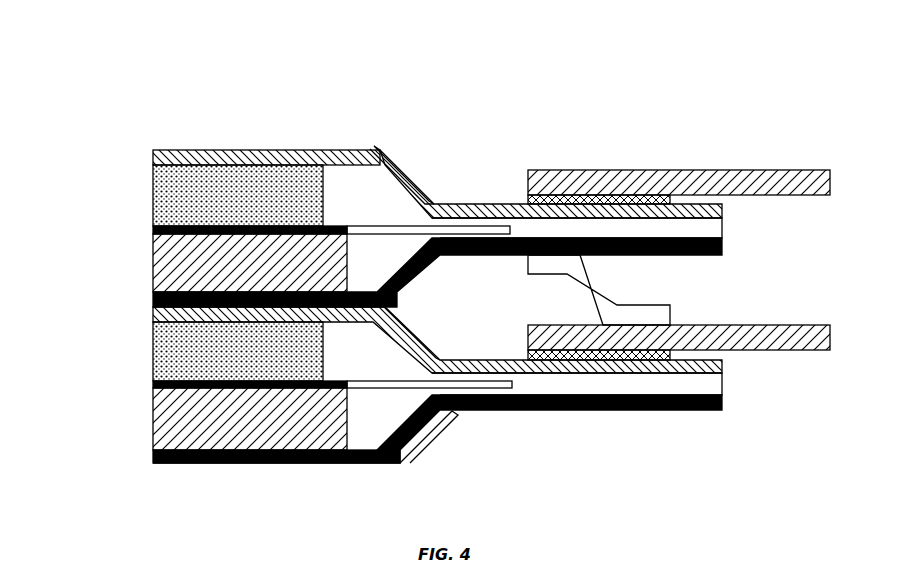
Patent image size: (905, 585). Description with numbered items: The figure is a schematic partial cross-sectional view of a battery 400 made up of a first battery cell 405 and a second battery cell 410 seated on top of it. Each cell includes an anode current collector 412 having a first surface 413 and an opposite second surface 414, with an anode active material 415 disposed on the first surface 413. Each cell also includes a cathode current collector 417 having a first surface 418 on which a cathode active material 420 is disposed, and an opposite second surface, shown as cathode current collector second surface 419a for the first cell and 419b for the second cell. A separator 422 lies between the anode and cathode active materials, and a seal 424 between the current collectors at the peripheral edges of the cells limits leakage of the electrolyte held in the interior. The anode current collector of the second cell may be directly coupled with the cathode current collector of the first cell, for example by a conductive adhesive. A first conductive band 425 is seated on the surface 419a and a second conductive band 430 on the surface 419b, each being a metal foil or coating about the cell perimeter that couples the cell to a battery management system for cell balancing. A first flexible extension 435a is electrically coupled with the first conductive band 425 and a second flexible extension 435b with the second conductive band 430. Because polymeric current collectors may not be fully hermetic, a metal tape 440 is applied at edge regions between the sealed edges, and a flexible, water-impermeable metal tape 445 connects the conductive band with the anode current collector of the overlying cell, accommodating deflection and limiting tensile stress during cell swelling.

The battery 400 is at (90, 78).
The first battery cell 405 is at (150, 332).
The second battery cell 410 is at (150, 198).
The anode current collector 412 is at (247, 465).
The first surface 413 is at (150, 438).
The second surface 414 is at (182, 465).
The anode active material 415 is at (370, 463).
The cathode current collector 417 is at (260, 150).
The first surface 418 is at (150, 183).
The cathode current collector second surface 419a is at (725, 367).
The cathode current collector second surface 419b is at (193, 148).
The cathode active material 420 is at (342, 150).
The separator 422 is at (375, 226).
The seal 424 is at (723, 228).
The first conductive band 425 is at (527, 355).
The second conductive band 430 is at (528, 195).
The first flexible extension 435a is at (783, 325).
The second flexible extension 435b is at (707, 170).
The metal tape 440 is at (447, 425).
The metal tape 445 is at (652, 305).